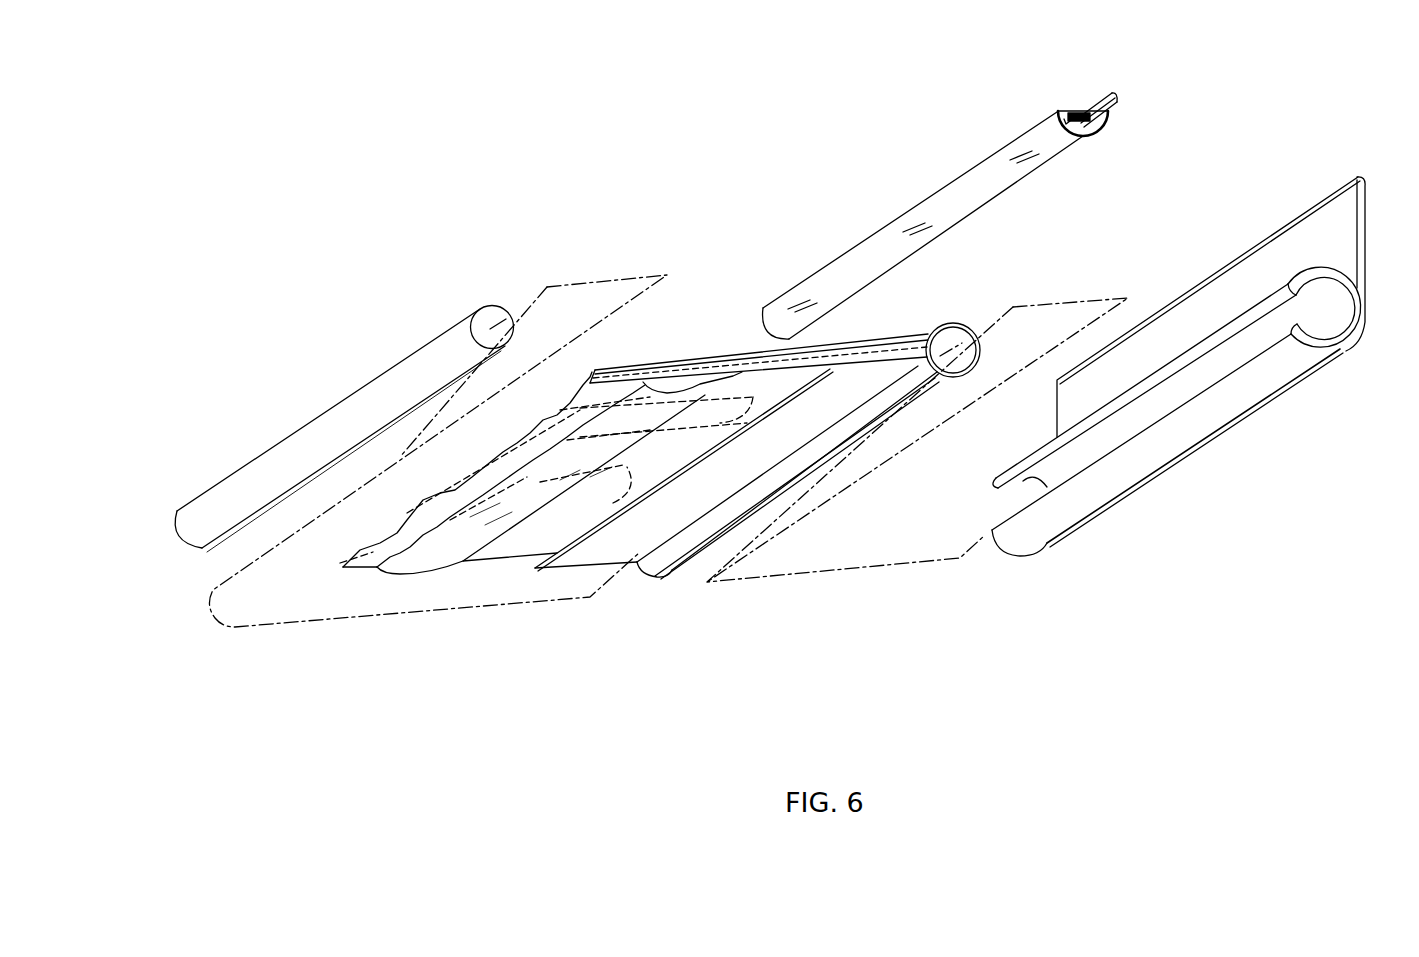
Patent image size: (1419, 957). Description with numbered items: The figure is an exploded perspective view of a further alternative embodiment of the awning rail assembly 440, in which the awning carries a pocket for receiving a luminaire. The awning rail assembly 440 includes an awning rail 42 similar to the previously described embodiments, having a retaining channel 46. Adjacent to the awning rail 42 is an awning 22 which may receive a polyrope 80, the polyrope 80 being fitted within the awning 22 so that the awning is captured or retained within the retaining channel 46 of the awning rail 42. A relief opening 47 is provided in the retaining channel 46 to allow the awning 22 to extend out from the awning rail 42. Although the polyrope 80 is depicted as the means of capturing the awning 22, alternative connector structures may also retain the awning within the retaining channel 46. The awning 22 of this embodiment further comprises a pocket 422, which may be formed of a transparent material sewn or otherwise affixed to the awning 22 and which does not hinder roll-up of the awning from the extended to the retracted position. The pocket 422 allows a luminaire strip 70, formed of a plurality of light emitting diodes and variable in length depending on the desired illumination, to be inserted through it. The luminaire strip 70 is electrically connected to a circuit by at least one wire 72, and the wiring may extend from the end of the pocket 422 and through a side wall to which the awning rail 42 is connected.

The awning rail assembly 440 is at (500, 103).
The polyrope 80 is at (496, 316).
The luminaire strip 70 is at (978, 112).
The wire 72 is at (1113, 97).
The awning rail 42 is at (1292, 186).
The retaining channel 46 is at (1288, 436).
The relief opening 47 is at (978, 515).
The awning 22 is at (643, 344).
The pocket 422 is at (452, 542).